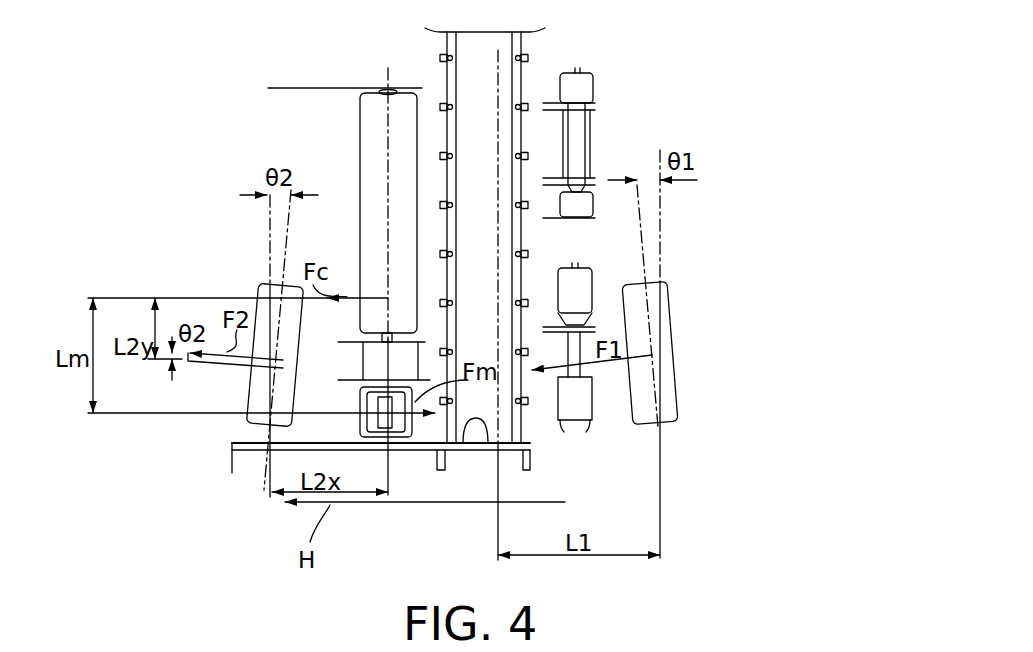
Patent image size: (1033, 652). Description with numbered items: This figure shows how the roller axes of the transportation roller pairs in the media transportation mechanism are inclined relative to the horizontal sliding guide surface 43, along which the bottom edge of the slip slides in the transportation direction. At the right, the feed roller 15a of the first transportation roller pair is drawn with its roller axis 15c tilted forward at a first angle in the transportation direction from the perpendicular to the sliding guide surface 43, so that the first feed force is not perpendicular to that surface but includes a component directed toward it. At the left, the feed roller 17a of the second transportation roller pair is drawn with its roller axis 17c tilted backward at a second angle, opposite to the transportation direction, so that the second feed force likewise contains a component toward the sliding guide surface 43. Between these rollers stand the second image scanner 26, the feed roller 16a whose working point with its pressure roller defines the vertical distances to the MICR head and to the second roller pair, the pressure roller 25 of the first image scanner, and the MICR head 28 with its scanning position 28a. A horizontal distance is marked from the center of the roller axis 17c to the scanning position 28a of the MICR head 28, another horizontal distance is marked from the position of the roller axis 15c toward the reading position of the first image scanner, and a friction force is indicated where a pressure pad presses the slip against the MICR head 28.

The second image scanner 26 is at (497, 43).
The feed roller 16a is at (358, 120).
The roller axis 17c is at (284, 262).
The feed roller 17a is at (247, 405).
The feed roller 15a is at (672, 402).
The roller axis 15c is at (642, 237).
The pressure roller 25 is at (583, 405).
The MICR head 28 is at (415, 428).
The scanning position 28a is at (392, 485).
The sliding guide surface 43 is at (487, 443).